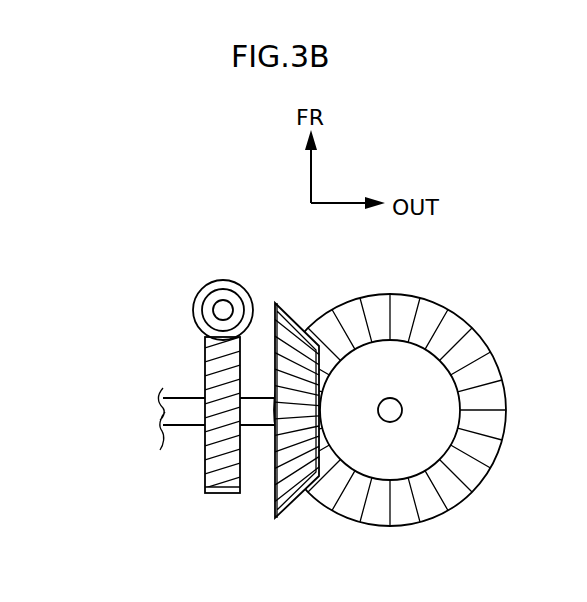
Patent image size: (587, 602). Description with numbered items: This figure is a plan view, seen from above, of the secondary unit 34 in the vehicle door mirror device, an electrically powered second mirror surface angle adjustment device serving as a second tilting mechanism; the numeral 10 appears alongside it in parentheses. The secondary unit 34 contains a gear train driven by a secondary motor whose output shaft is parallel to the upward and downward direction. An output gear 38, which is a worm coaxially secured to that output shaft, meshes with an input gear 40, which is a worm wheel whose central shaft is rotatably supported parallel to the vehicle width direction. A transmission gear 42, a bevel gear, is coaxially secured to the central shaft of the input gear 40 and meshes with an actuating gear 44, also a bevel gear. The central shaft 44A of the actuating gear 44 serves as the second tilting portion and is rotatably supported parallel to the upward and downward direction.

The vehicle 10 is at (293, 366).
The secondary unit 34 is at (153, 237).
The output gear 38 is at (232, 280).
The input gear 40 is at (215, 493).
The transmission gear 42 is at (289, 312).
The actuating gear 44 is at (462, 316).
The central shaft 44A is at (390, 422).